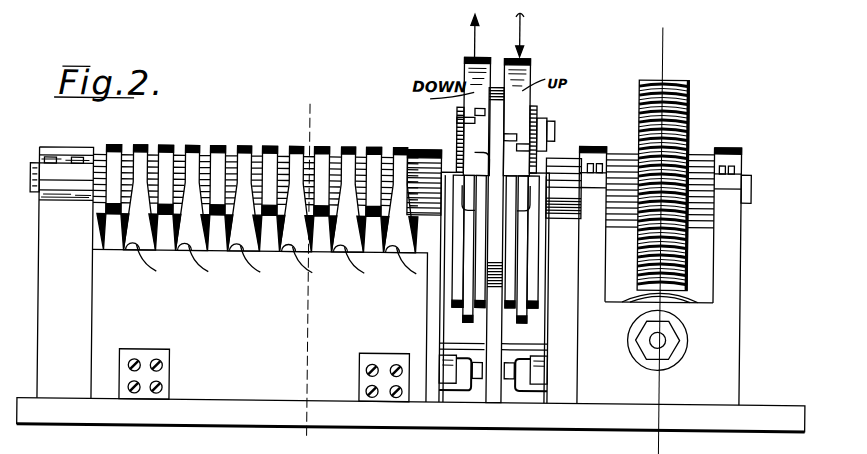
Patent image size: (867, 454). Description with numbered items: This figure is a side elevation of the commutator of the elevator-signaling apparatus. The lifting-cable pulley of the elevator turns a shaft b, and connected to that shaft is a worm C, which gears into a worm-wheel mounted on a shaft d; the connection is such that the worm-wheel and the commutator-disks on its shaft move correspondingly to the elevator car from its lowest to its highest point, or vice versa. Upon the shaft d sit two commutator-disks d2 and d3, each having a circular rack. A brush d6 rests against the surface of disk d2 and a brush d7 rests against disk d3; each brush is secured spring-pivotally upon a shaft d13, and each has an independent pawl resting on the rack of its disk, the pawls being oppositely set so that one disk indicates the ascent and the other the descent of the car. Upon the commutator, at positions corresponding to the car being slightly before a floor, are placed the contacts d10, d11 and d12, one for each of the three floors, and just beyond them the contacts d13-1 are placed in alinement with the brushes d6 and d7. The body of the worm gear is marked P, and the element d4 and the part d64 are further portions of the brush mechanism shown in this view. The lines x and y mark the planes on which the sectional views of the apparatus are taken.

The commutator-disk d3 is at (463, 67).
The commutator-disk d2 is at (530, 66).
The contact d10 is at (477, 112).
The shaft d13 is at (457, 130).
The contact d11 is at (465, 156).
The contact d13-1 is at (512, 137).
The contact d12 is at (552, 130).
The brush d7 is at (463, 228).
The slide bar d4 is at (480, 265).
The brush d6 is at (502, 273).
The slide bar d64 is at (518, 238).
The worm gear P is at (689, 100).
The shaft d is at (750, 180).
The worm C is at (674, 299).
The shaft b is at (672, 340).
The section line x x is at (343, 80).
The section line y y is at (671, 240).